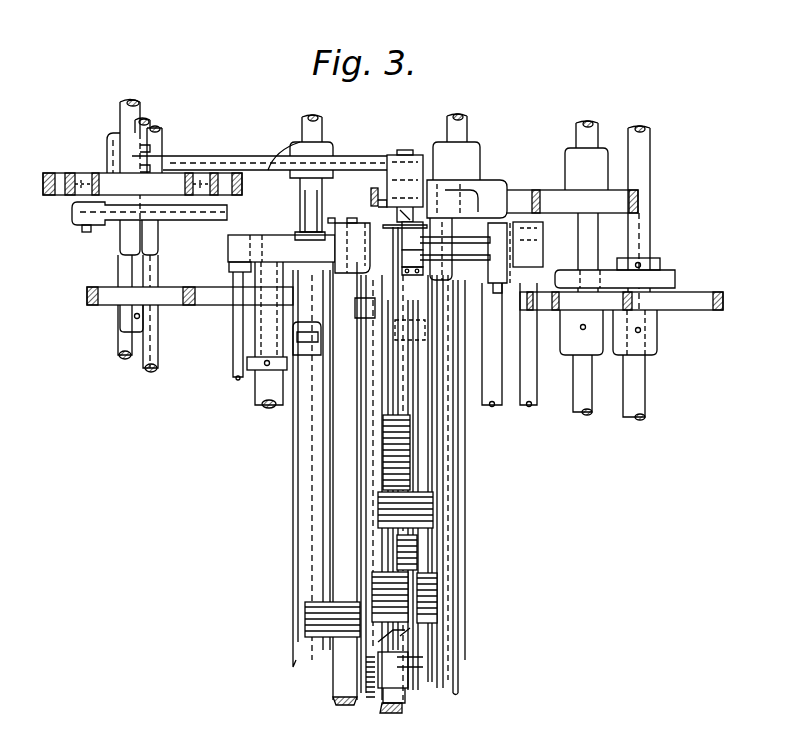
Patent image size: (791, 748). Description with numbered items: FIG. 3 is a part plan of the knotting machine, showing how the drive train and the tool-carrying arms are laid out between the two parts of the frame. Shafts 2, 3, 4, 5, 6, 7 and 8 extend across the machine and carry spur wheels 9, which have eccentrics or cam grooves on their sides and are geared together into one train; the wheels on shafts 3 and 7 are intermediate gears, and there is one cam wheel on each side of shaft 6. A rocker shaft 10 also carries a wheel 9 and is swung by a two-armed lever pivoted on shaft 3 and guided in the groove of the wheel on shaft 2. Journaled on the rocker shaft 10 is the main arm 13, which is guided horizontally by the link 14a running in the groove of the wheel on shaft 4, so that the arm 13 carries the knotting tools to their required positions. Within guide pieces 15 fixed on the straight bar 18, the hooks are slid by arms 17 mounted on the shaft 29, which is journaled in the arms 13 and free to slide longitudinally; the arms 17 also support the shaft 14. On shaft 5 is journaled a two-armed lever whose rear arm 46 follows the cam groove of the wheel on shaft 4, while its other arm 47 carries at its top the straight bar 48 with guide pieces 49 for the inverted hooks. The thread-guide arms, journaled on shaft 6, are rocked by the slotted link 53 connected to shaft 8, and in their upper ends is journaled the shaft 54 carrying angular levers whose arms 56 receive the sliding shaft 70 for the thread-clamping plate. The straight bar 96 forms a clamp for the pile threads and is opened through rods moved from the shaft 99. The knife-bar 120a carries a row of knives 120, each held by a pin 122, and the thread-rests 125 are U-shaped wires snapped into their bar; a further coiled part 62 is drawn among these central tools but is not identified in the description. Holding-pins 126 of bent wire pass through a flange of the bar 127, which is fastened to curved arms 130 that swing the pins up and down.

The shaft 2 is at (119, 110).
The shaft 3 is at (150, 122).
The shaft 4 is at (162, 143).
The shaft 5 is at (326, 148).
The shaft 6 is at (468, 133).
The shaft 7 is at (576, 134).
The shaft 8 is at (651, 138).
The spur wheel 9 is at (58, 187).
The rocker shaft 10 is at (314, 130).
The arm 13 is at (228, 250).
The shaft 14 is at (312, 455).
The link 14a is at (128, 212).
The guide piece 15 is at (343, 600).
The arm 17 is at (293, 337).
The straight bar 18 is at (334, 678).
The shaft 29 is at (300, 465).
The rear arm 46 is at (247, 170).
The arm 47 is at (358, 160).
The straight bar 48 is at (371, 197).
The guide piece 49 is at (405, 590).
The slotted link 53 is at (666, 281).
The shaft 54 is at (492, 407).
The arm 56 is at (460, 186).
The spring 62 is at (428, 492).
The shaft 70 is at (445, 503).
The straight bar 96 is at (372, 255).
The shaft 99 is at (530, 407).
The knife 120 is at (412, 546).
The knife-bar 120a is at (410, 634).
The pin 122 is at (410, 303).
The thread-rest 125 is at (400, 456).
The holding-pin 126 is at (375, 700).
The bar 127 is at (362, 488).
The curved arm 130 is at (357, 312).